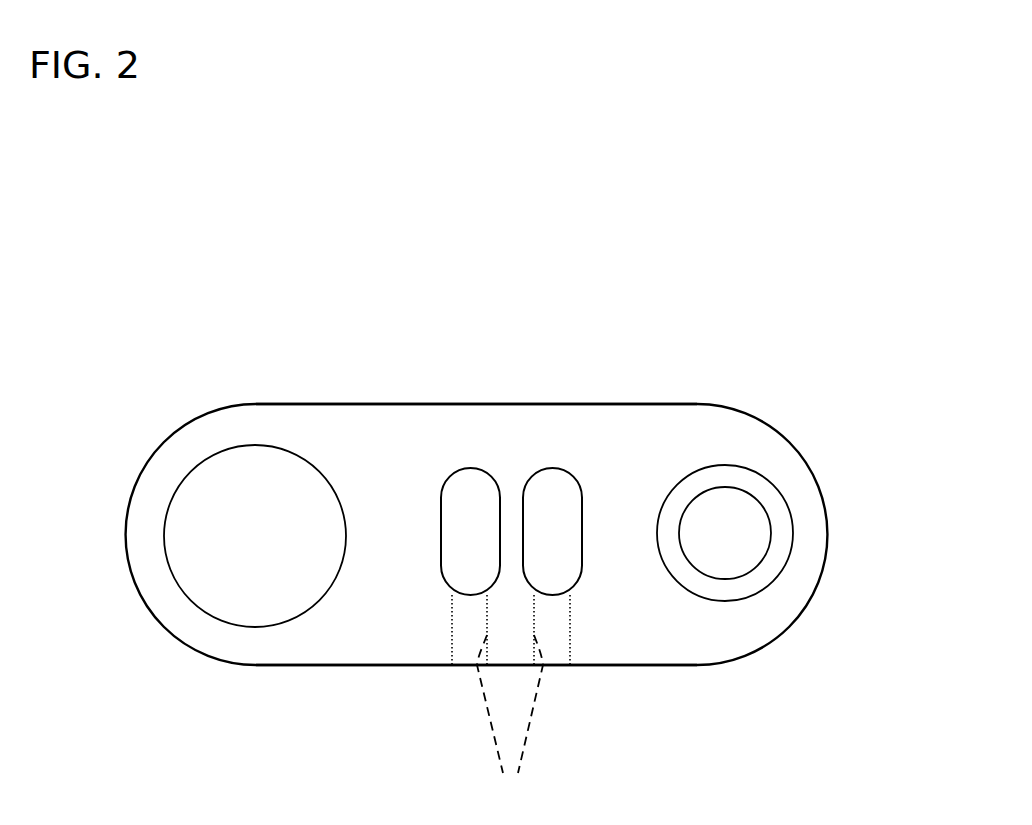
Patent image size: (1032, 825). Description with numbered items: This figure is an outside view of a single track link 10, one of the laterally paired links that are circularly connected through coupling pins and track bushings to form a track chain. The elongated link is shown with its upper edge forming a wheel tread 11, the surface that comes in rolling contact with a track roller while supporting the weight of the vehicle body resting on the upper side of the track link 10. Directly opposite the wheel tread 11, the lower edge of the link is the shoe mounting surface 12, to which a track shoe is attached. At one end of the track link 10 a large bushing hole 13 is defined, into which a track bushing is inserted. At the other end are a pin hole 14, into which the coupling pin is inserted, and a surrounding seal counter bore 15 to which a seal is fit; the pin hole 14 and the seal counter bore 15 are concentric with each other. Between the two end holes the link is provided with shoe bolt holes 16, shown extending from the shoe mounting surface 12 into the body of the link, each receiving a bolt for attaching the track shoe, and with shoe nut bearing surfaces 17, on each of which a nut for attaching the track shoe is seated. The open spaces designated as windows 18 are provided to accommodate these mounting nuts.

The track link 10 is at (745, 240).
The wheel tread 11 is at (412, 404).
The shoe mounting surface 12 is at (432, 665).
The bushing hole 13 is at (163, 524).
The pin hole 14 is at (750, 500).
The seal counter bore 15 is at (787, 553).
The shoe bolt holes 16 is at (510, 719).
The shoe nut bearing surfaces 17 is at (553, 595).
The windows 18 is at (484, 513).